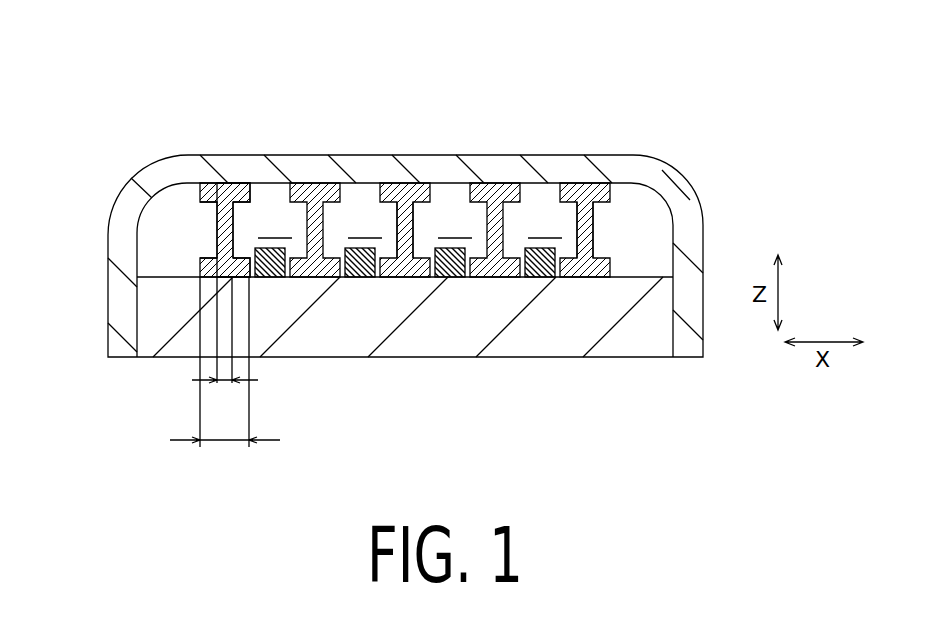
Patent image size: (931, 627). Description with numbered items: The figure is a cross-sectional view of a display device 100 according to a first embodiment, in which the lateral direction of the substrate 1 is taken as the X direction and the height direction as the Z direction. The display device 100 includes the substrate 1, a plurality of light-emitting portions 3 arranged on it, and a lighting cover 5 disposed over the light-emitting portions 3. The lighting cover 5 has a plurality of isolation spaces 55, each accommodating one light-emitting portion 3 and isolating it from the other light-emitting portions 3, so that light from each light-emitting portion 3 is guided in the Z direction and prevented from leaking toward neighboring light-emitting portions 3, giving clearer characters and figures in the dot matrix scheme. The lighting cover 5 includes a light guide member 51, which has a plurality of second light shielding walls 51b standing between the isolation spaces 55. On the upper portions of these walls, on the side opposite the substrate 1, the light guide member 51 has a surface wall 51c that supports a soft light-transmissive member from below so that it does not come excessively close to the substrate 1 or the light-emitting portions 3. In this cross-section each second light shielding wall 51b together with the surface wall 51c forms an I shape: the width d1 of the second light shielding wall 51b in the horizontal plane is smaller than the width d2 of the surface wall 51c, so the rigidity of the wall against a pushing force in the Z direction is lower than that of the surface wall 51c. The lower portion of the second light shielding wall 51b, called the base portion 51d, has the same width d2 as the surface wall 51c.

The display device 100 is at (736, 99).
The substrate 1 is at (620, 358).
The light-emitting portion 3 is at (275, 278).
The lighting cover 5 is at (438, 120).
The light guide member 51 is at (321, 173).
The second light shielding wall 51b is at (230, 237).
The surface wall 51c is at (202, 189).
The base portion 51d is at (200, 262).
The isolation space 55 is at (410, 227).
The width of the light shielding walls d1 is at (225, 349).
The width of the surface wall d2 is at (225, 375).